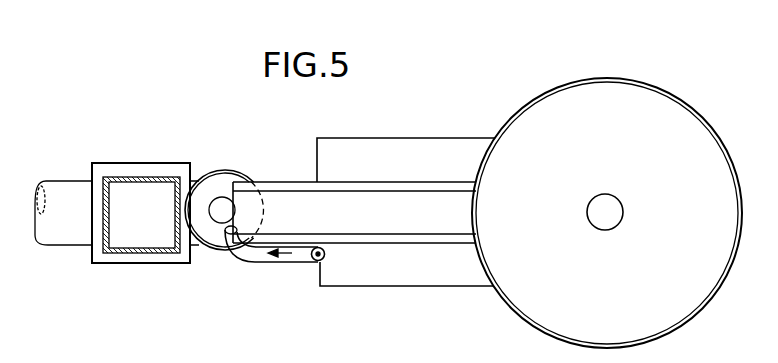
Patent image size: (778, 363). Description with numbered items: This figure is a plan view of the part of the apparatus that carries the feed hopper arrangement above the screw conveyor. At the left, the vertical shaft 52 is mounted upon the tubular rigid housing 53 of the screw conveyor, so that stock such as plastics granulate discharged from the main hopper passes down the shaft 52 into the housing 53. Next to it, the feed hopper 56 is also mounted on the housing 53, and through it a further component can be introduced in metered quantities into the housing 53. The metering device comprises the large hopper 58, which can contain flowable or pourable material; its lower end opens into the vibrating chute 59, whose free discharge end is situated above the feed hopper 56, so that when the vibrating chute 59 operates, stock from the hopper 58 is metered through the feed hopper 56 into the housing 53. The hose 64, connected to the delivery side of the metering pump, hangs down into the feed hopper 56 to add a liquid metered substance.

The vertical shaft 52 is at (130, 177).
The tubular rigid housing 53 is at (62, 192).
The feed hopper 56 is at (218, 170).
The hopper 58 is at (585, 78).
The vibrating chute 59 is at (388, 197).
The hose 64 is at (258, 263).